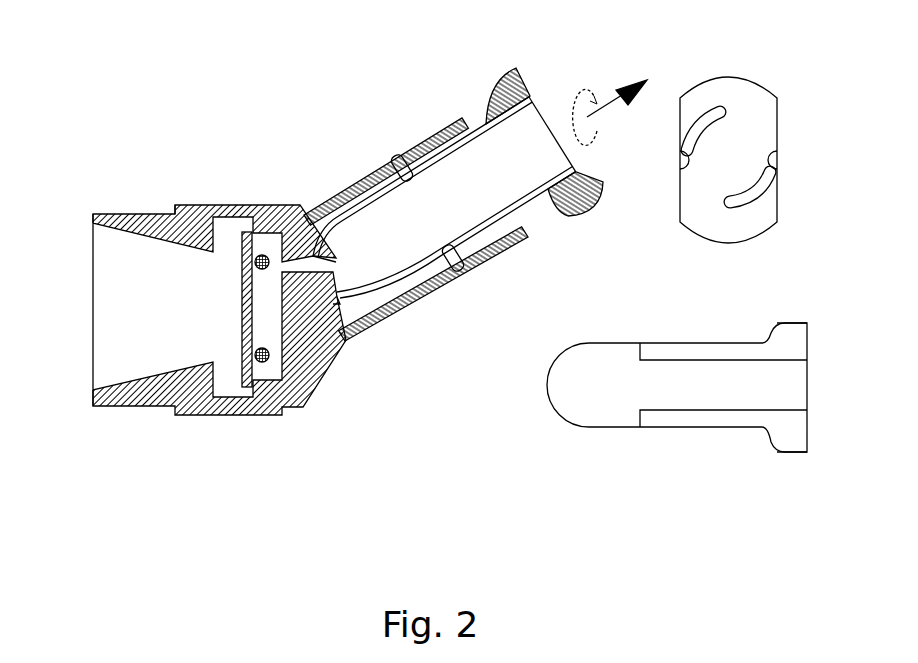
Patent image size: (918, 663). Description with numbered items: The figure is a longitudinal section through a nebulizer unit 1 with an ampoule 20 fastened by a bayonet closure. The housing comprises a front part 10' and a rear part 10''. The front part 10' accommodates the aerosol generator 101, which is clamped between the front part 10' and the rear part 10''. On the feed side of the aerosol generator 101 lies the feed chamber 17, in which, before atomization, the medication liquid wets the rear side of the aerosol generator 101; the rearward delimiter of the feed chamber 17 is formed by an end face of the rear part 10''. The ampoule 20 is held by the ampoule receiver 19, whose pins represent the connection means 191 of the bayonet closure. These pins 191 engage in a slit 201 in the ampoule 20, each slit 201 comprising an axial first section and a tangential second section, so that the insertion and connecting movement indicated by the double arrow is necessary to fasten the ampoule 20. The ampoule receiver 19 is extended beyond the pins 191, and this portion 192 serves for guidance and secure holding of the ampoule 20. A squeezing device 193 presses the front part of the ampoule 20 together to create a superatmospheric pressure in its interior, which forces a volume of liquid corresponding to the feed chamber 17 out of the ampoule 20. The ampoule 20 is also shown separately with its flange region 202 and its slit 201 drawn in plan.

The nebulizer unit 1 is at (175, 65).
The front part 10' is at (191, 339).
The rear part 10'' is at (458, 237).
The feed chamber 17 is at (275, 327).
The ampoule receiver 19 is at (382, 153).
The connection means 191 is at (403, 151).
The portion 192 is at (516, 246).
The squeezing device 193 is at (306, 236).
The aerosol generator 101 is at (240, 306).
The ampoule 20 is at (697, 282).
The slit 201 is at (678, 160).
The flange 202 is at (600, 190).